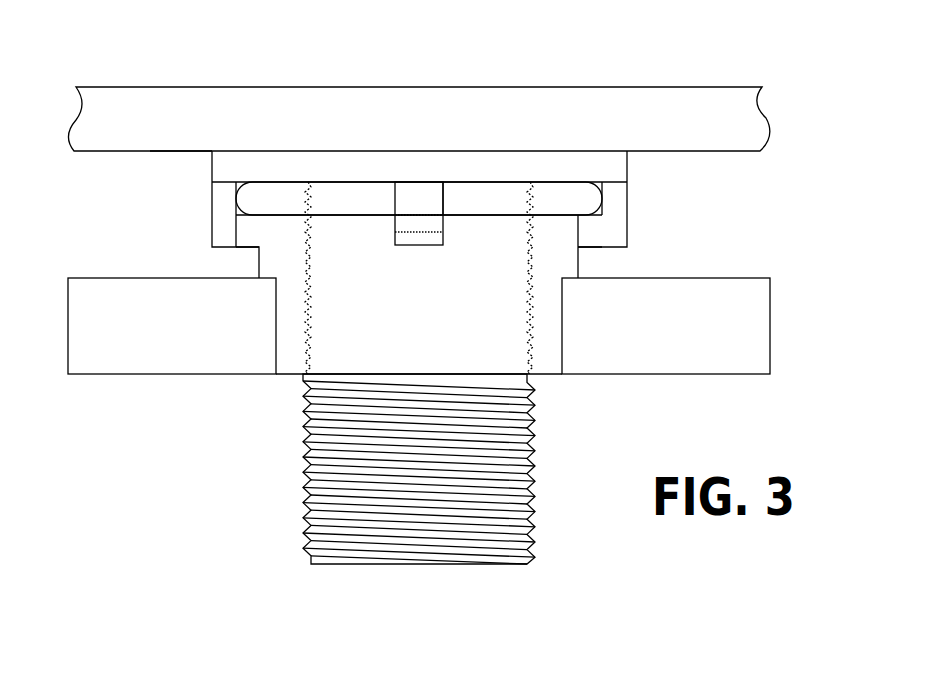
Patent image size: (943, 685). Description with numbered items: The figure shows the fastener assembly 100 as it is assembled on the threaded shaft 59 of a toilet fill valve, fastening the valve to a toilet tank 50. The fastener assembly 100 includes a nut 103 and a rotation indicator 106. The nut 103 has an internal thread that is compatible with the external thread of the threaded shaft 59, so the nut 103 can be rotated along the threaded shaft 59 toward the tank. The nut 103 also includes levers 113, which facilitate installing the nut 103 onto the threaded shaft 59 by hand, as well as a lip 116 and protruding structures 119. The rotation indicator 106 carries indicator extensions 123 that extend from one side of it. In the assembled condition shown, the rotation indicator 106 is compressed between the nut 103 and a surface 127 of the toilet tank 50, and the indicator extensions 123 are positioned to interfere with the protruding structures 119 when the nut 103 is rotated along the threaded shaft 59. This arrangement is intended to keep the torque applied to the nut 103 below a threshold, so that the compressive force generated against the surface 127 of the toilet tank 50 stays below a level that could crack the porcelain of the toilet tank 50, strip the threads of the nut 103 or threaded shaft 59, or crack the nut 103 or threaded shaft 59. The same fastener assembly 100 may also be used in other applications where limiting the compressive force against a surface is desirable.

The toilet tank 50 is at (651, 110).
The threaded shaft 59 is at (540, 503).
The fastener assembly 100 is at (788, 230).
The nut 103 is at (252, 408).
The rotation indicator 106 is at (662, 175).
The levers 113 is at (172, 352).
The lip 116 is at (465, 205).
The protruding structures 119 is at (244, 240).
The indicator extensions 123 is at (222, 219).
The surface 127 is at (188, 150).